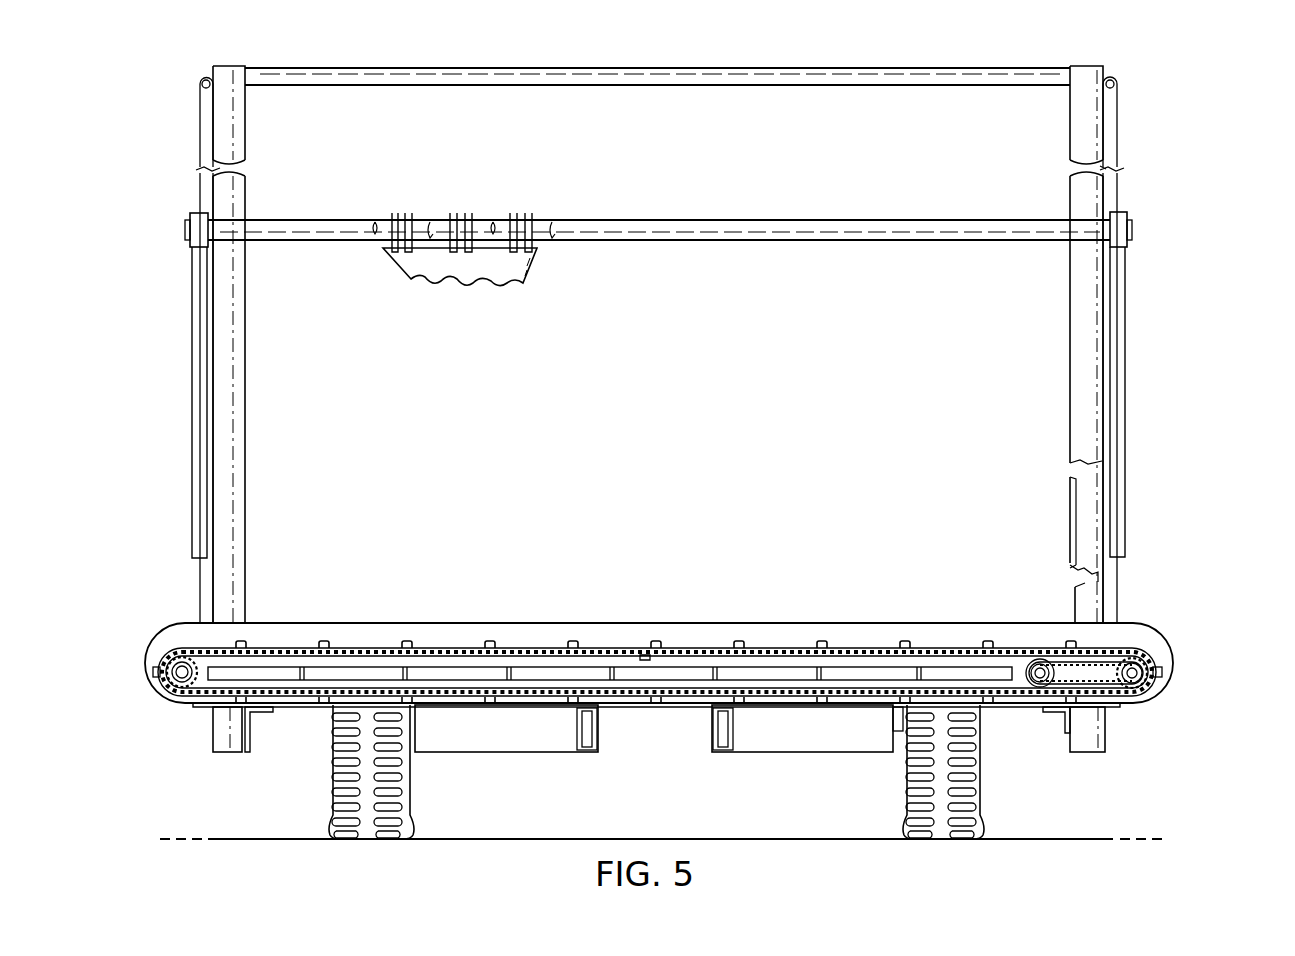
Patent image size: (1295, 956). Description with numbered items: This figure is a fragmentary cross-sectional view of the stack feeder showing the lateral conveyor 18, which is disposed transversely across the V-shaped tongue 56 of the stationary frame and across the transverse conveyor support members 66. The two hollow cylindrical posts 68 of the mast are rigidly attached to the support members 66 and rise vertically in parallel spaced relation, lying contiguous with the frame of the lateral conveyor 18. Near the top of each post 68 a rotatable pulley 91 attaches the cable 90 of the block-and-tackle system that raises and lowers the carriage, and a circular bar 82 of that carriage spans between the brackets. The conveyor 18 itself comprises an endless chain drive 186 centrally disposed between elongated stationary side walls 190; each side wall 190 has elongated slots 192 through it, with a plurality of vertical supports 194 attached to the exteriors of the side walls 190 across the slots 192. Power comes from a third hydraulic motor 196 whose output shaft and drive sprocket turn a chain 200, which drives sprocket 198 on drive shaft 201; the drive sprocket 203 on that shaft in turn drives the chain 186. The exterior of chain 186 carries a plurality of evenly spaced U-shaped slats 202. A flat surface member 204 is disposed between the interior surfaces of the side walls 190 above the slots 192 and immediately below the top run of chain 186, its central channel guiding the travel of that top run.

The lateral conveyor 18 is at (692, 644).
The V-shaped tongue 56 is at (477, 748).
The transverse conveyor support member 66 is at (250, 712).
The hollow cylindrical post 68 is at (1070, 333).
The circular bar 82 is at (800, 242).
The cable 90 is at (1117, 118).
The rotatable pulley 91 is at (1112, 78).
The endless chain drive 186 is at (1140, 653).
The stationary side wall 190 is at (868, 646).
The elongated slot 192 is at (230, 665).
The vertical support 194 is at (713, 677).
The third hydraulic motor 196 is at (1025, 705).
The sprocket 198 is at (1167, 678).
The chain 200 is at (1120, 704).
The drive shaft 201 is at (1148, 668).
The U-shaped slat 202 is at (990, 642).
The drive sprocket 203 is at (1147, 656).
The flat surface member 204 is at (642, 657).